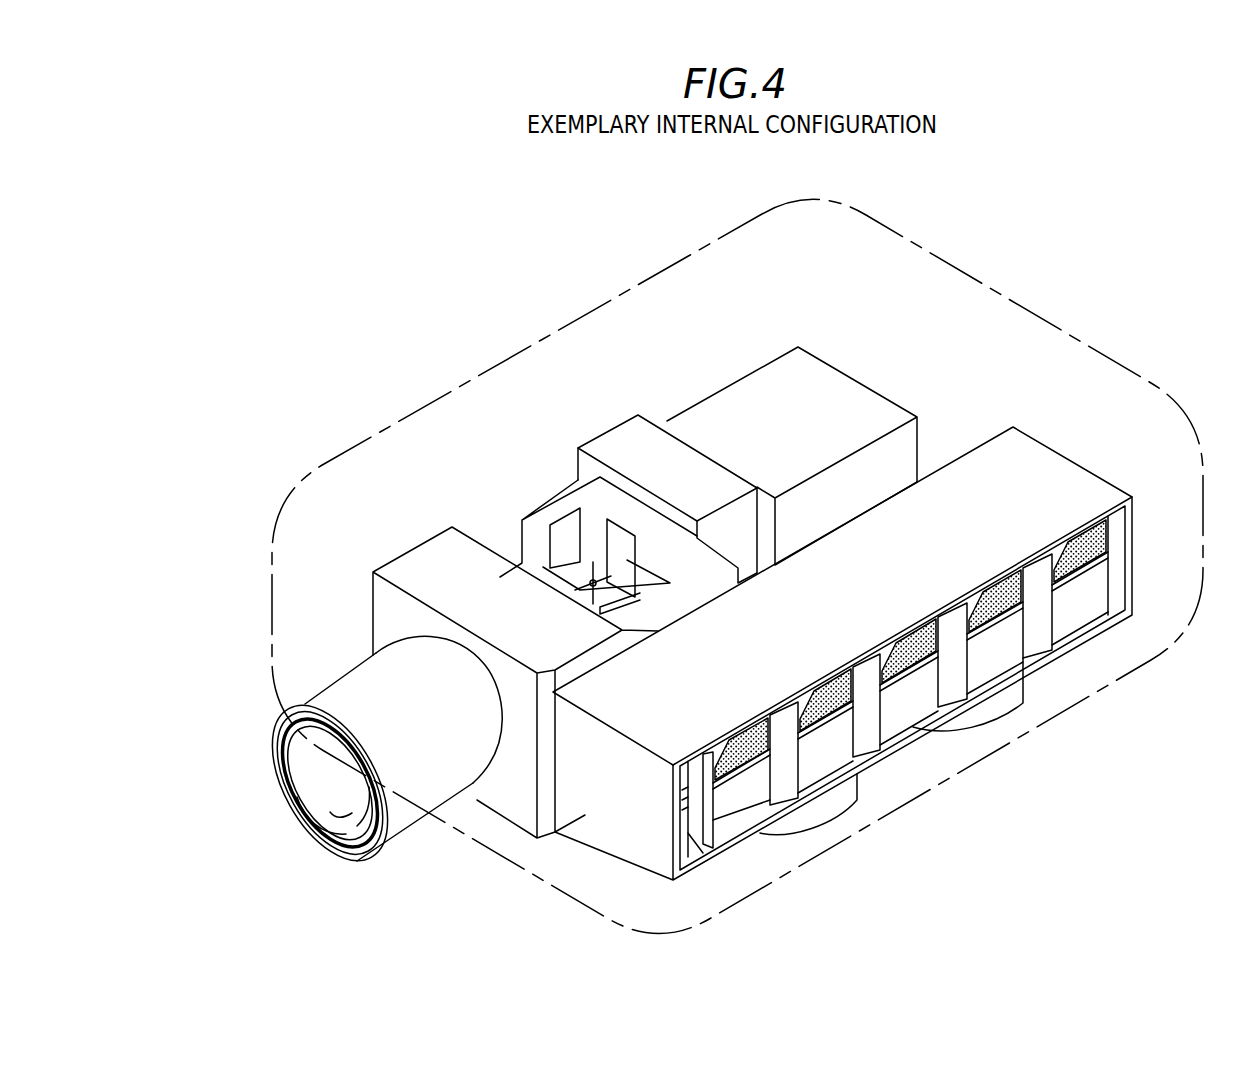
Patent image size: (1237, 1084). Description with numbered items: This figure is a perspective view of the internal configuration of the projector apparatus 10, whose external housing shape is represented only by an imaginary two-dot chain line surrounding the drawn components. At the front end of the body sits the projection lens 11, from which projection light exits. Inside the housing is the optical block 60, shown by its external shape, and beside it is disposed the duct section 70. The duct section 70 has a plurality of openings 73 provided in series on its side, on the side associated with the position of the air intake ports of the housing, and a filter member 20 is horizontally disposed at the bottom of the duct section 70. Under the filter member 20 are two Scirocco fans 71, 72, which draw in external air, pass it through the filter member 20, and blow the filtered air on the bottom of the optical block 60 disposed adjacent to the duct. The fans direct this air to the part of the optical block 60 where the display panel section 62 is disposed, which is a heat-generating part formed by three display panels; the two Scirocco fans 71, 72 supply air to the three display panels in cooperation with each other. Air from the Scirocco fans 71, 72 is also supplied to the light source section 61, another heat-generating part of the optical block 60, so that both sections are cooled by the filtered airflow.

The projector apparatus 10 is at (983, 280).
The projection lens 11 is at (293, 772).
The filter member 20 is at (907, 677).
The optical block 60 is at (618, 440).
The light source section 61 is at (842, 395).
The display panel section 62 is at (533, 523).
The duct section 70 is at (1053, 480).
The Scirocco fan 71 is at (993, 708).
The Scirocco fan 72 is at (842, 802).
The openings 73 is at (732, 803).